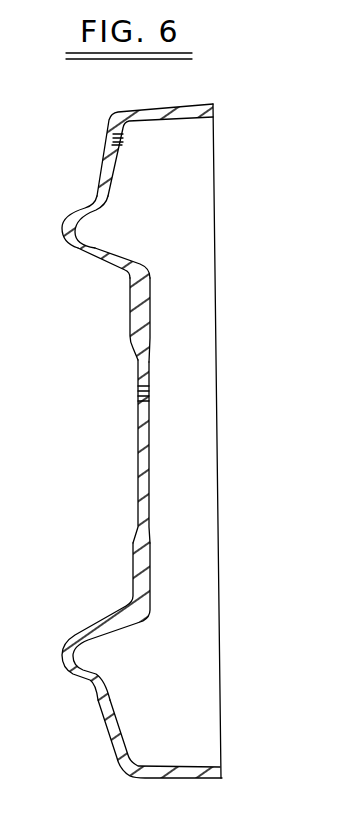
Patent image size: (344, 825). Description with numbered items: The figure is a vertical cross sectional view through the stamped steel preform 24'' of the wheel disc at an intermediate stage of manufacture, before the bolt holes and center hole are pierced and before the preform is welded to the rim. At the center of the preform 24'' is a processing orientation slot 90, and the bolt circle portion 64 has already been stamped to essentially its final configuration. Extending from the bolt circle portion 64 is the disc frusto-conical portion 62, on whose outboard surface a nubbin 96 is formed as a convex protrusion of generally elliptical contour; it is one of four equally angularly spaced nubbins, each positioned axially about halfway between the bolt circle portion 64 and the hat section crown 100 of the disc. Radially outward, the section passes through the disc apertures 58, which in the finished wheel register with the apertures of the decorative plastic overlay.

The stamped steel preform 24'' is at (181, 441).
The disc apertures 58 is at (112, 143).
The hat section crown 100 is at (62, 222).
The disc frusto-conical portion 62 is at (112, 255).
The bolt circle portion 64 is at (143, 303).
The processing orientation slot 90 is at (150, 417).
The nubbin 96 is at (100, 622).